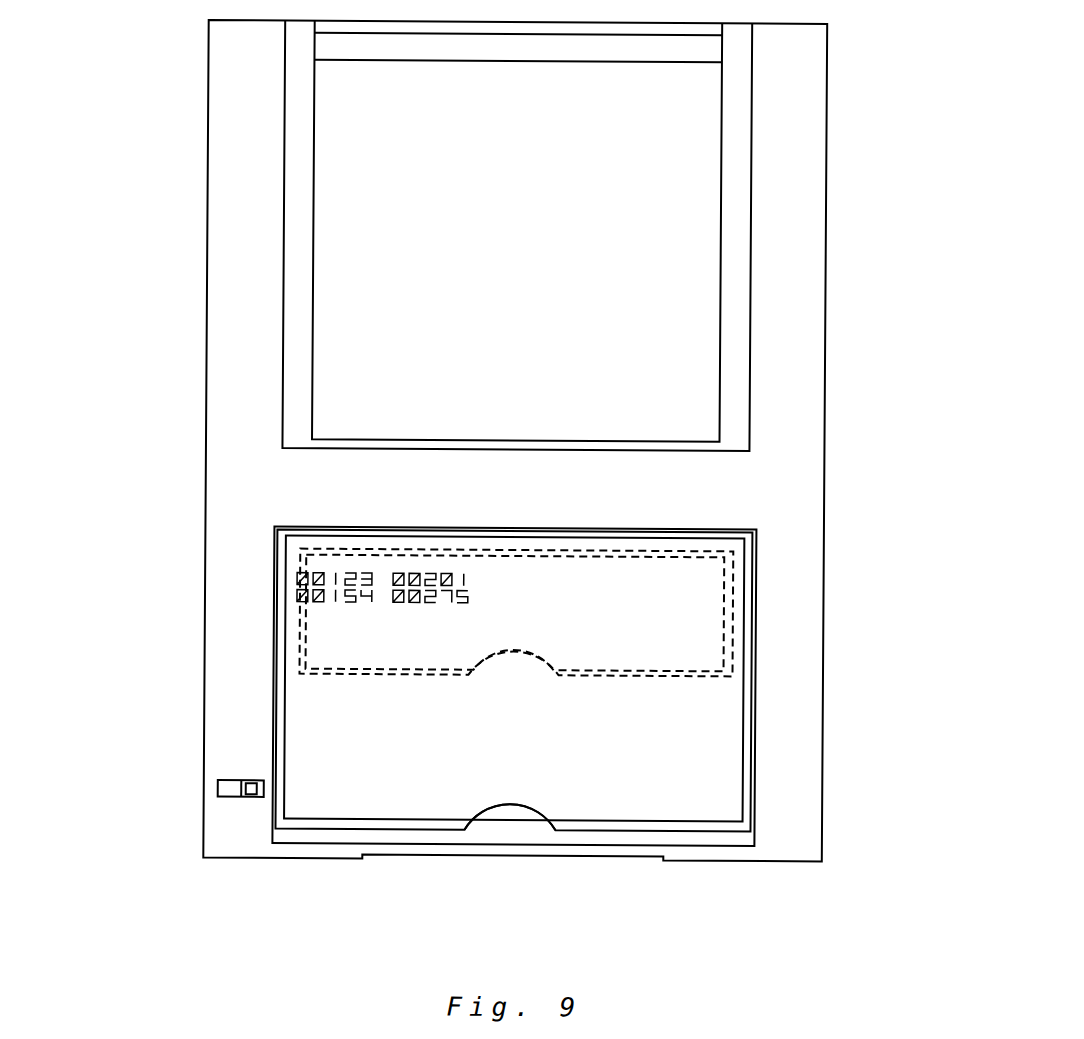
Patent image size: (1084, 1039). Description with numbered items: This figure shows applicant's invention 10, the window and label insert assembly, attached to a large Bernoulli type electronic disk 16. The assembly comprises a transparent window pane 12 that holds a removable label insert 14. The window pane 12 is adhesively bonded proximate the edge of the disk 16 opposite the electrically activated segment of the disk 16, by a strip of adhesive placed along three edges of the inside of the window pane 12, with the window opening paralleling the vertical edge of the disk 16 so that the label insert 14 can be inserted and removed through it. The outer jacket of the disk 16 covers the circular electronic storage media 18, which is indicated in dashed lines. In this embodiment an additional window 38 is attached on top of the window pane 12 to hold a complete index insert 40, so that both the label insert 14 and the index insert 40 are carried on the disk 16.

The invention 10 is at (240, 744).
The transparent window pane 12 is at (751, 710).
The removable label insert 14 is at (702, 754).
The electronic disk 16 is at (267, 486).
The circular electronic storage media 18 is at (519, 812).
The additional window 38 is at (732, 585).
The complete index insert 40 is at (671, 644).